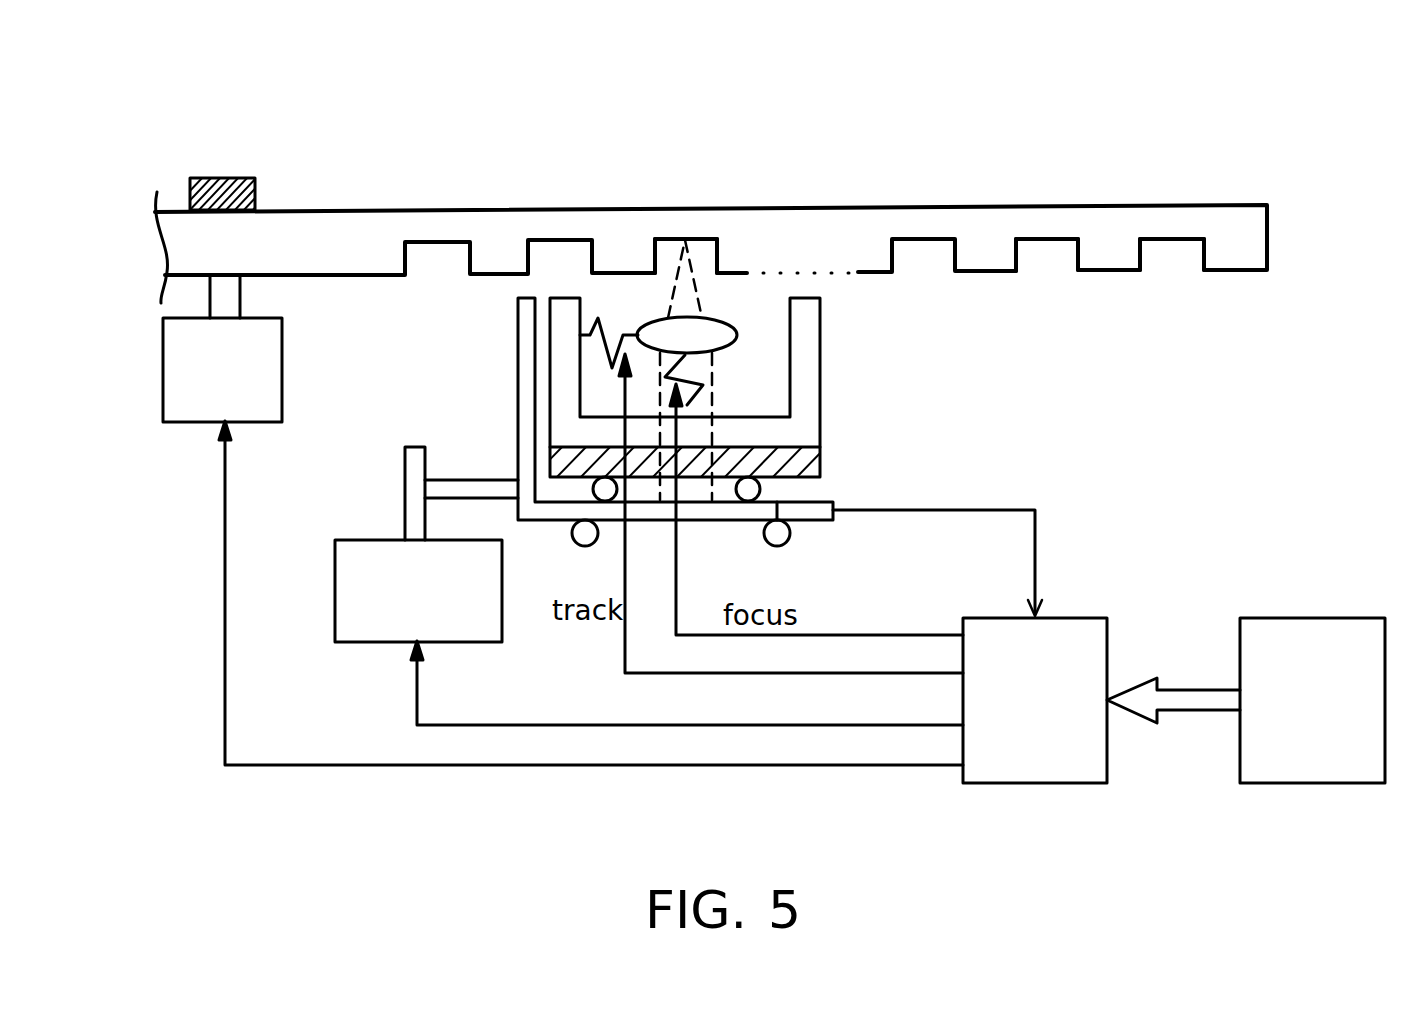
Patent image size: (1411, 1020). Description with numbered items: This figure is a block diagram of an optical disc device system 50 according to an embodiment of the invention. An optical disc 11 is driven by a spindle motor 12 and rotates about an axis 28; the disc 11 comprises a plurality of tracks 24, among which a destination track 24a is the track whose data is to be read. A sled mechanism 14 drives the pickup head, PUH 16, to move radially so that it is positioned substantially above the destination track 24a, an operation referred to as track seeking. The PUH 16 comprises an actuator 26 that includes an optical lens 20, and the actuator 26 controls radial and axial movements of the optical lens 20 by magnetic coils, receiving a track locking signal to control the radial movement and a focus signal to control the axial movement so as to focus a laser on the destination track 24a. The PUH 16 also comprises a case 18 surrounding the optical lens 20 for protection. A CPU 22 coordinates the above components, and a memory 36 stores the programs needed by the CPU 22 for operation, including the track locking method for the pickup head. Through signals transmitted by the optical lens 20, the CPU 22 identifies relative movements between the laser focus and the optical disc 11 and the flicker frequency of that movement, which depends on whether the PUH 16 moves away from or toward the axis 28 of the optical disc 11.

The optical disc drive system 50 is at (116, 87).
The optical disc 11 is at (1267, 205).
The axis 28 is at (226, 174).
The destination track 24a is at (713, 234).
The tracks 24 is at (1048, 286).
The spindle motor 12 is at (163, 372).
The sled mechanism 14 is at (335, 592).
The PUH 16 is at (838, 506).
The case 18 is at (824, 338).
The optical lens 20 is at (735, 330).
The actuator 26 is at (824, 460).
The CPU 22 is at (1037, 785).
The memory 36 is at (1312, 785).